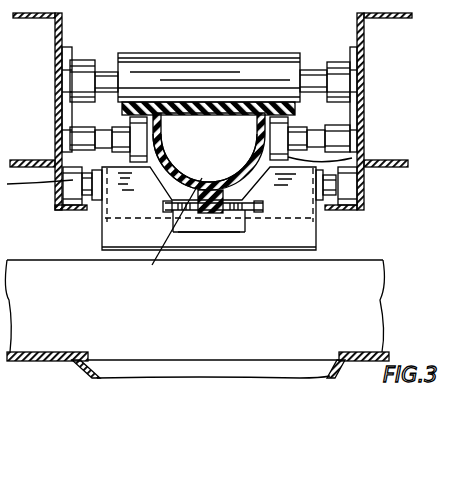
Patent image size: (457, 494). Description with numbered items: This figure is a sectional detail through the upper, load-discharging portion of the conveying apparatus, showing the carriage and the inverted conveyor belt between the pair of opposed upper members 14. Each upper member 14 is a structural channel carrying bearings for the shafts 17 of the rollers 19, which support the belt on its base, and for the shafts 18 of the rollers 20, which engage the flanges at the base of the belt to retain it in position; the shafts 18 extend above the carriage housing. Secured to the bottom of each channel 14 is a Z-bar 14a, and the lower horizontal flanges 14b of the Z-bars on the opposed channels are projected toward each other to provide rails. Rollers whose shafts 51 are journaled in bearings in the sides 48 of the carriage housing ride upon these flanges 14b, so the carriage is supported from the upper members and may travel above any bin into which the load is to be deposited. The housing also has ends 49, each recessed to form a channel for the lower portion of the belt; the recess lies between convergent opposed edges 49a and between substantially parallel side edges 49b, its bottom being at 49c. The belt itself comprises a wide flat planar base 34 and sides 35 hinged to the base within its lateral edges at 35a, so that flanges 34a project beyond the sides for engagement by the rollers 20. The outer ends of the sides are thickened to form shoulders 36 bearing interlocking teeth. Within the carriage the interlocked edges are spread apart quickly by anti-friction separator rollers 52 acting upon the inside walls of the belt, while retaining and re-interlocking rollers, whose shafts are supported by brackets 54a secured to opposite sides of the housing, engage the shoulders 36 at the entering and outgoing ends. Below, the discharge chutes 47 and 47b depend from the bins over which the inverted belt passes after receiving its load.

The opposed upper member 14 is at (55, 42).
The Z-bar 14a is at (60, 193).
The lower horizontal flange 14b is at (80, 211).
The roller shaft 17 is at (104, 75).
The roller 19 is at (217, 66).
The flange 34a is at (294, 113).
The roller 20 is at (133, 128).
The roller shaft 18 is at (315, 132).
The base 34 is at (222, 112).
The side 35 is at (167, 157).
The hinge connection 35a is at (171, 116).
The bracket 54a is at (237, 200).
The parallel side edge 49b is at (247, 225).
The recess bottom 49c is at (210, 233).
The housing side 48 is at (100, 235).
The separator roller 52 is at (164, 203).
The housing end 49 is at (262, 200).
The convergent opposed edge 49a is at (265, 205).
The roller shaft 51 is at (84, 176).
The shoulder 36 is at (167, 232).
The discharge chute 47 is at (372, 288).
The discharge chute 47b is at (97, 370).